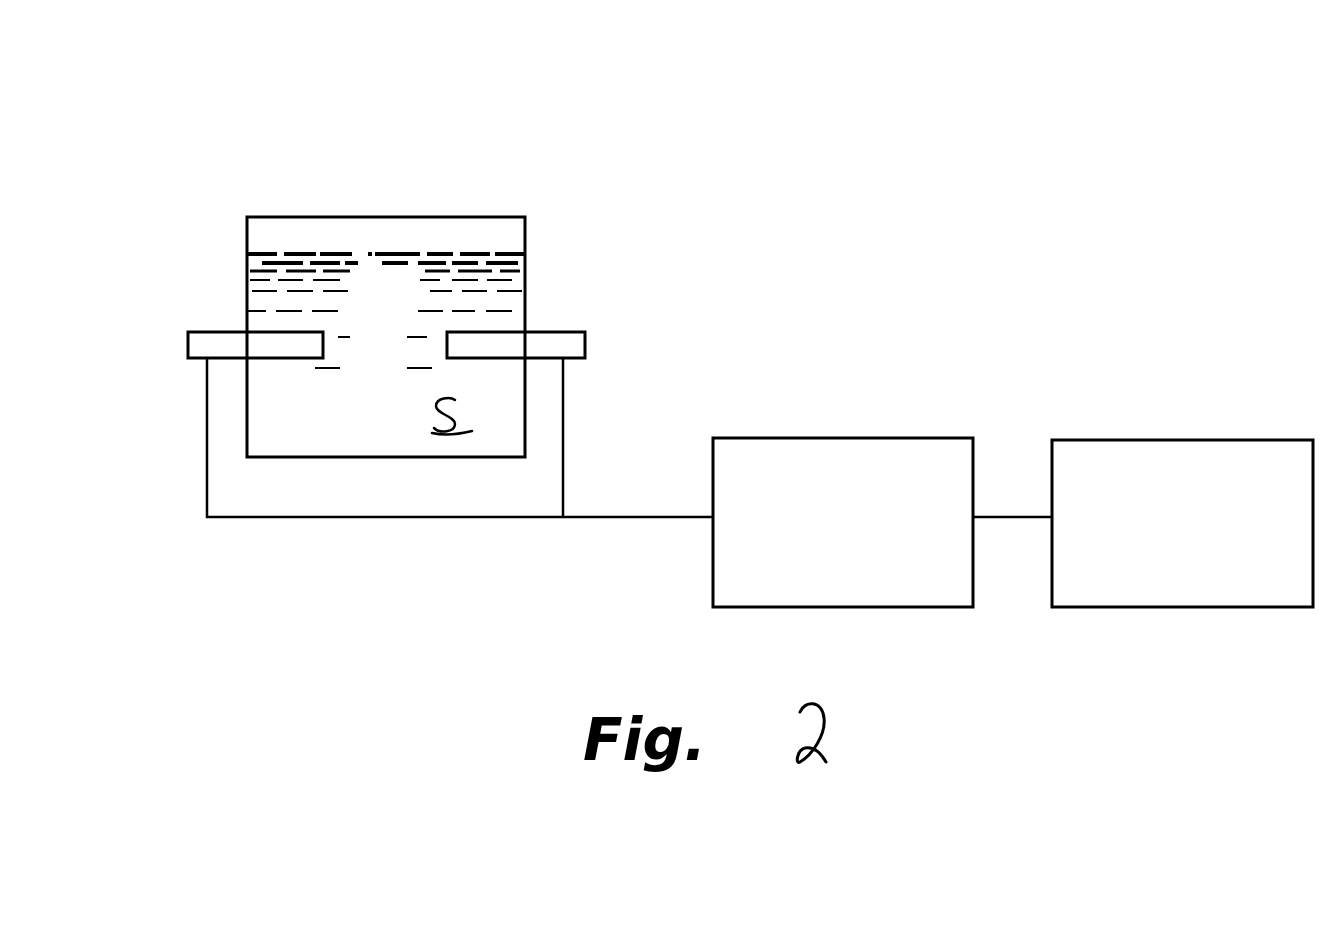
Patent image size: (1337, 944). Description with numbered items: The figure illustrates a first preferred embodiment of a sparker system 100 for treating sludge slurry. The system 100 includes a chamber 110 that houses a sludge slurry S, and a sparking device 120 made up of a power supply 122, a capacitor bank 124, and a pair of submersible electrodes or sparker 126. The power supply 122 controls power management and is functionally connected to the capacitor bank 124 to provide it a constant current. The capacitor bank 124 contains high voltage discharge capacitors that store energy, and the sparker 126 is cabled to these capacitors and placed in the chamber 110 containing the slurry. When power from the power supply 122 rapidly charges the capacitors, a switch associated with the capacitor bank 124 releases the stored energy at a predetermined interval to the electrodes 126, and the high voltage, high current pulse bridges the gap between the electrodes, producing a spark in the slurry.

The system 100 is at (142, 160).
The chamber 110 is at (527, 232).
The sparking device 120 is at (890, 218).
The power supply 122 is at (1177, 438).
The capacitor bank 124 is at (890, 580).
The electrodes or sparker 126 is at (225, 333).